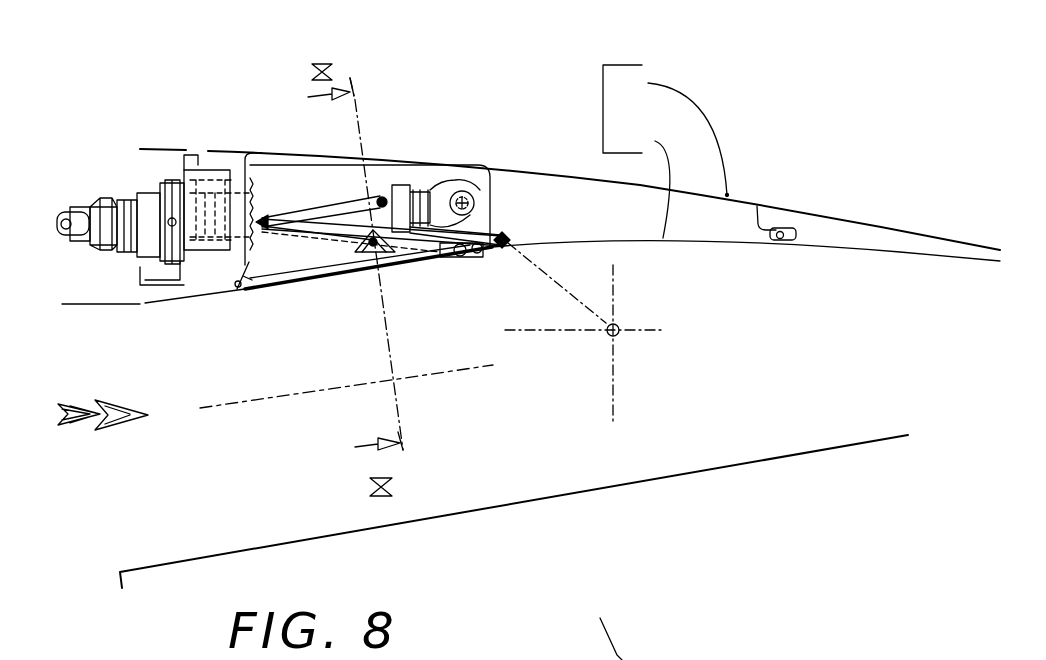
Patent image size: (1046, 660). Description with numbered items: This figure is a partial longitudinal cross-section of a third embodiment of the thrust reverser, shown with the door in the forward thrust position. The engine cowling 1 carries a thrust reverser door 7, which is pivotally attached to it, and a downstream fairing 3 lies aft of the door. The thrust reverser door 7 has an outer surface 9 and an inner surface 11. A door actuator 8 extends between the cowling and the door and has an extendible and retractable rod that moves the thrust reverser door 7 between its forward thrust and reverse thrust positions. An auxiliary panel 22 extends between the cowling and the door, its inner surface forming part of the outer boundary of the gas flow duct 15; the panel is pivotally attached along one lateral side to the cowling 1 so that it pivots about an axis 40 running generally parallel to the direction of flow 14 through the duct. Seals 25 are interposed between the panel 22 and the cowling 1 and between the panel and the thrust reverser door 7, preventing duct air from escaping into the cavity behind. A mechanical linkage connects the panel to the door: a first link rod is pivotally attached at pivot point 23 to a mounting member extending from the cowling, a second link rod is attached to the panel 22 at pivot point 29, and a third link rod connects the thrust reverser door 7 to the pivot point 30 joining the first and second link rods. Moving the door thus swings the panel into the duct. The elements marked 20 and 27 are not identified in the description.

The engine cowling 1 is at (157, 147).
The downstream fairing 3 is at (838, 232).
The thrust reverser door 7 is at (524, 190).
The door actuator 8 is at (405, 165).
The outer surface 9 is at (666, 131).
The inner surface 11 is at (641, 180).
The direction of flow 14 is at (103, 434).
The gas flow duct 15 is at (514, 492).
The pivot axis 20 is at (622, 323).
The auxiliary panel 22 is at (298, 273).
The pivot point 23 is at (381, 198).
The seal 25 is at (240, 296).
The pivot joint 27 is at (499, 249).
The pivot point 29 is at (365, 253).
The pivot point 30 is at (270, 160).
The pivot axis 40 is at (240, 405).